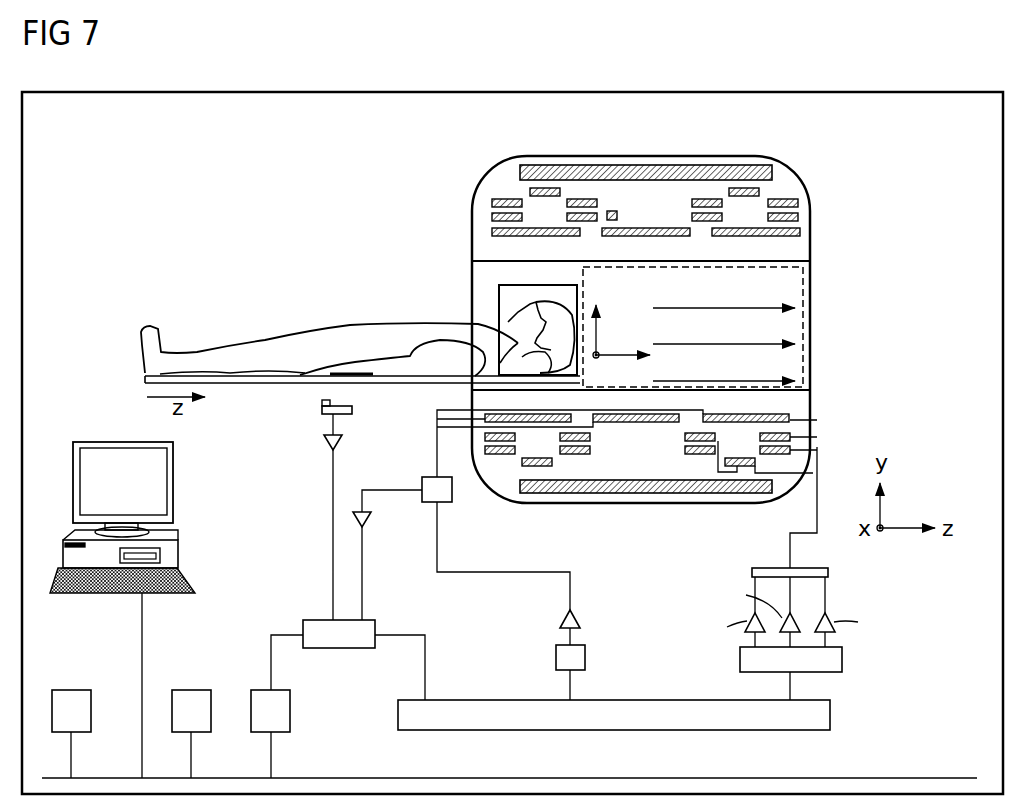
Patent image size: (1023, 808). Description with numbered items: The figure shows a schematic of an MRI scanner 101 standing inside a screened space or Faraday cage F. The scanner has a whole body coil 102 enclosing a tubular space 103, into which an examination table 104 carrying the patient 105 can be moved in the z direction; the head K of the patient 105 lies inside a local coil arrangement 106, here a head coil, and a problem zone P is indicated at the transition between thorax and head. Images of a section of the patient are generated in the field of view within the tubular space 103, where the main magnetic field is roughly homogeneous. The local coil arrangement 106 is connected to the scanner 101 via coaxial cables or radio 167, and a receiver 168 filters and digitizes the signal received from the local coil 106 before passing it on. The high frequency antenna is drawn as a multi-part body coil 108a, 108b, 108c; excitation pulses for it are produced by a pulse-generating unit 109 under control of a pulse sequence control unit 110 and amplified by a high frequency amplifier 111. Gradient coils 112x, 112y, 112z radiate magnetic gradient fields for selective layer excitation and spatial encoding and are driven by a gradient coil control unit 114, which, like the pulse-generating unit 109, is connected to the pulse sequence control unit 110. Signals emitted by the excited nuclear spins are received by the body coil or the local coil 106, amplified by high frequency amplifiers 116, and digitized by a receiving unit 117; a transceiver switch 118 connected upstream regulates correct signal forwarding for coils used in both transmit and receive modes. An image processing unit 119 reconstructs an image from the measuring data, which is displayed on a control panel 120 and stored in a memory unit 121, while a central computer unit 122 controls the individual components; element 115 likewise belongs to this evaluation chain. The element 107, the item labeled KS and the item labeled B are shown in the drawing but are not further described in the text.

The MRI scanner 101 is at (722, 309).
The whole body coil 102 is at (690, 157).
The tubular space 103 is at (822, 328).
The examination table 104 is at (243, 384).
The patient 105 is at (358, 328).
The local coil arrangement 106 is at (499, 290).
The basic field magnet 107 is at (548, 165).
The body coil part 108a is at (492, 232).
The body coil part 108b is at (636, 228).
The body coil part 108c is at (800, 232).
The pulse-generating unit 109 is at (586, 657).
The pulse sequence control unit 110 is at (831, 715).
The high frequency amplifier 111 is at (582, 620).
The gradient coil 112x is at (800, 216).
The gradient coil 112y is at (800, 203).
The gradient coil 112z is at (759, 192).
The gradient coil control unit 114 is at (843, 660).
The evaluation device element 115 is at (325, 445).
The high frequency amplifier 116 is at (370, 520).
The receiving unit 117 is at (338, 649).
The transceiver switch 118 is at (422, 485).
The image processing unit 119 is at (256, 690).
The control panel 120 is at (178, 553).
The memory unit 121 is at (73, 690).
The central computer unit 122 is at (191, 690).
The coaxial cables or radio 167 is at (322, 404).
The receiver 168 is at (352, 410).
The Faraday cage F is at (498, 92).
The coil sensor KS is at (612, 211).
The head K is at (500, 320).
The problem zone P is at (497, 345).
The body B is at (265, 350).